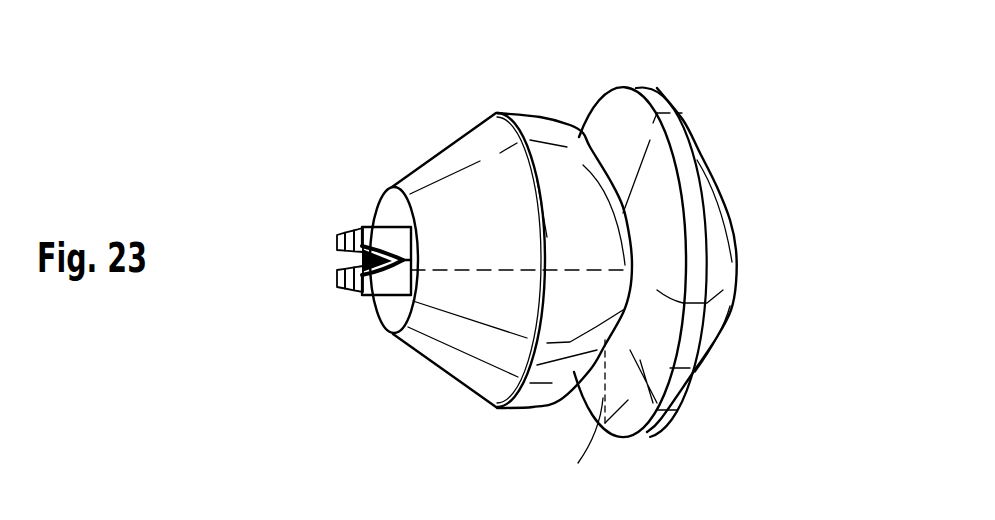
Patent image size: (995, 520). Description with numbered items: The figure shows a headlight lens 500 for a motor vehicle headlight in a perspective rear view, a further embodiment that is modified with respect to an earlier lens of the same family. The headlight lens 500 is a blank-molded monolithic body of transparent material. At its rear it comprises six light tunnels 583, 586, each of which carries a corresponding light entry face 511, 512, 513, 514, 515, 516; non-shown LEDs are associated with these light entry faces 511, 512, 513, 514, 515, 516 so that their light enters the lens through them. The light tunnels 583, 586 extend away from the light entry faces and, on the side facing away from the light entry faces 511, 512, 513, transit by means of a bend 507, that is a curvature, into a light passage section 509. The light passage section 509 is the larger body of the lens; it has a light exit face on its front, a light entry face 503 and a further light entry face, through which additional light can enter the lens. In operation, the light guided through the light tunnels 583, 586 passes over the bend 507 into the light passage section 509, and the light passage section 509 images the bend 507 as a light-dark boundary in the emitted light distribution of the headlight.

The headlight lens 500 is at (467, 88).
The light entry face 503 is at (613, 122).
The bend 507 is at (413, 260).
The light passage section 509 is at (555, 365).
The light entry face 511 is at (336, 242).
The light entry face 512 is at (340, 233).
The light entry face 513 is at (352, 230).
The light entry face 514 is at (336, 282).
The light entry face 515 is at (341, 291).
The light entry face 516 is at (353, 294).
The light tunnel 583 is at (391, 245).
The light tunnel 586 is at (388, 276).